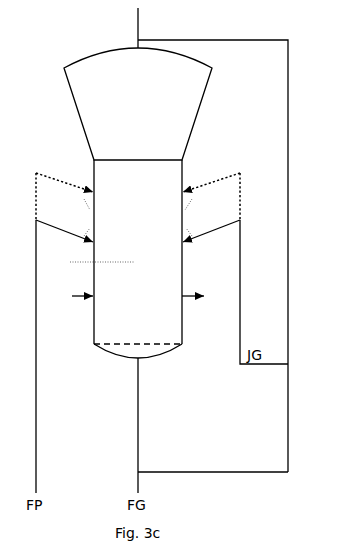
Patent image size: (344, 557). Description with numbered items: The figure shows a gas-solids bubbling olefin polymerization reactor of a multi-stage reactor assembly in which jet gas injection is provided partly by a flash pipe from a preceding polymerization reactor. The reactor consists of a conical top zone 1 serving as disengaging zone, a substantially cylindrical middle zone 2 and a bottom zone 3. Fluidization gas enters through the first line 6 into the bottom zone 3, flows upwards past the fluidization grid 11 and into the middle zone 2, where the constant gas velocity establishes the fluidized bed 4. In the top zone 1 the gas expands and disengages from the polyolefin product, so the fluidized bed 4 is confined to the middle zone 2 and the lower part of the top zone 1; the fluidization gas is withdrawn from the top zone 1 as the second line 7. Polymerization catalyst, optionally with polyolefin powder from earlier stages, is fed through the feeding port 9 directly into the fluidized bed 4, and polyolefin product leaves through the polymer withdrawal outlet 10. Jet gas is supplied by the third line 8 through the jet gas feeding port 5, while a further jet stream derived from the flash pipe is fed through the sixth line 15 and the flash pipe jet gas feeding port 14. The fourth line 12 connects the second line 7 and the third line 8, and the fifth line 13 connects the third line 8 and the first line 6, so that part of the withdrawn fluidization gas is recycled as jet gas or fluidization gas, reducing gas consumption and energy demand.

The top zone 1 is at (138, 104).
The middle zone 2 is at (138, 252).
The bottom zone 3 is at (138, 352).
The fluidized bed 4 is at (85, 356).
The jet gas feeding port 5 is at (211, 220).
The first line 6 is at (131, 425).
The second line 7 is at (143, 28).
The third line 8 is at (211, 196).
The feeding port for polymerization catalyst 9 is at (81, 306).
The polymer withdrawal outlet 10 is at (194, 306).
The fluidization grid 11 is at (174, 352).
The fourth line 12 is at (213, 246).
The fifth line 13 is at (213, 346).
The flash pipe jet gas feeding port 14 is at (82, 217).
The sixth line 15 is at (64, 196).